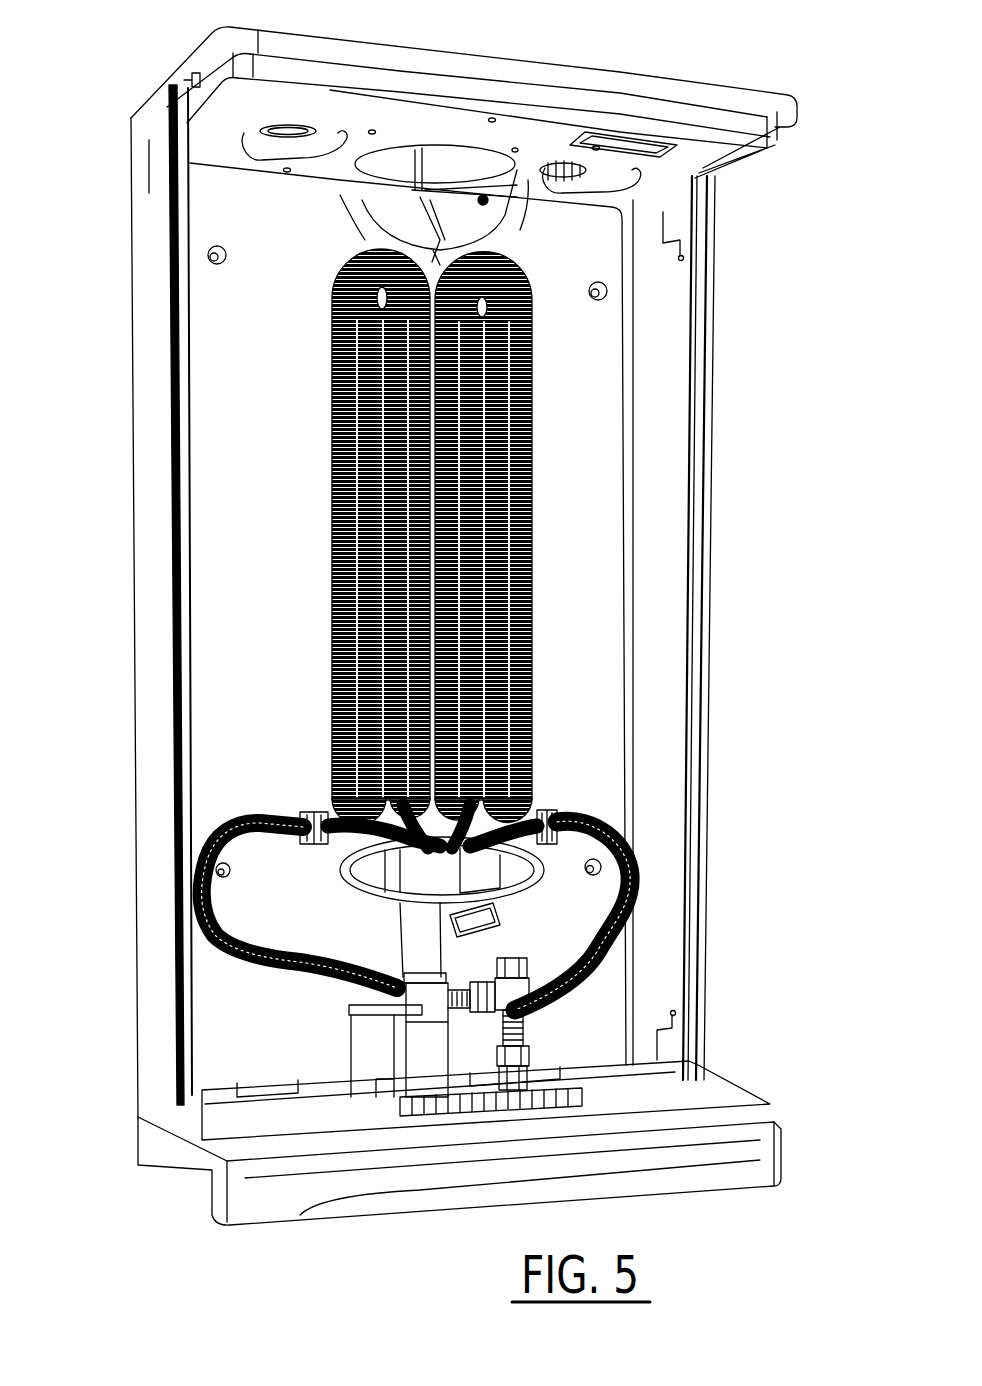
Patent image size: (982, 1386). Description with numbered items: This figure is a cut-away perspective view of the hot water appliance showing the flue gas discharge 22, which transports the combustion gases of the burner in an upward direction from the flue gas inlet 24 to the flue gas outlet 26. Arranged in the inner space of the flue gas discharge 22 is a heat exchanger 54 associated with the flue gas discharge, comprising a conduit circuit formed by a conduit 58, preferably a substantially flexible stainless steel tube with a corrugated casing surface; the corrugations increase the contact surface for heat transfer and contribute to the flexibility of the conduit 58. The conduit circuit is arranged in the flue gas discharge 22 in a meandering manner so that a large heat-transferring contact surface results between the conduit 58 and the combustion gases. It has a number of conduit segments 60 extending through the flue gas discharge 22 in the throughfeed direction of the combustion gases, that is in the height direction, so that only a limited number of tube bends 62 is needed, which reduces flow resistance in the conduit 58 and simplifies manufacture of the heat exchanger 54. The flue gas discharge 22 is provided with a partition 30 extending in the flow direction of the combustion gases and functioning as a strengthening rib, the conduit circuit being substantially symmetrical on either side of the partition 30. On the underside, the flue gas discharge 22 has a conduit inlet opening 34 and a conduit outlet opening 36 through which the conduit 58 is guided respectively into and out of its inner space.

The flue gas discharge 22 is at (530, 231).
The flue gas inlet 24 is at (470, 882).
The flue gas outlet 26 is at (437, 175).
The partition 30 is at (433, 250).
The conduit inlet opening 34 is at (560, 790).
The conduit outlet opening 36 is at (303, 868).
The heat exchanger 54 is at (578, 433).
The conduit 58 is at (607, 922).
The conduit segments 60 is at (347, 510).
The tube bends 62 is at (378, 250).